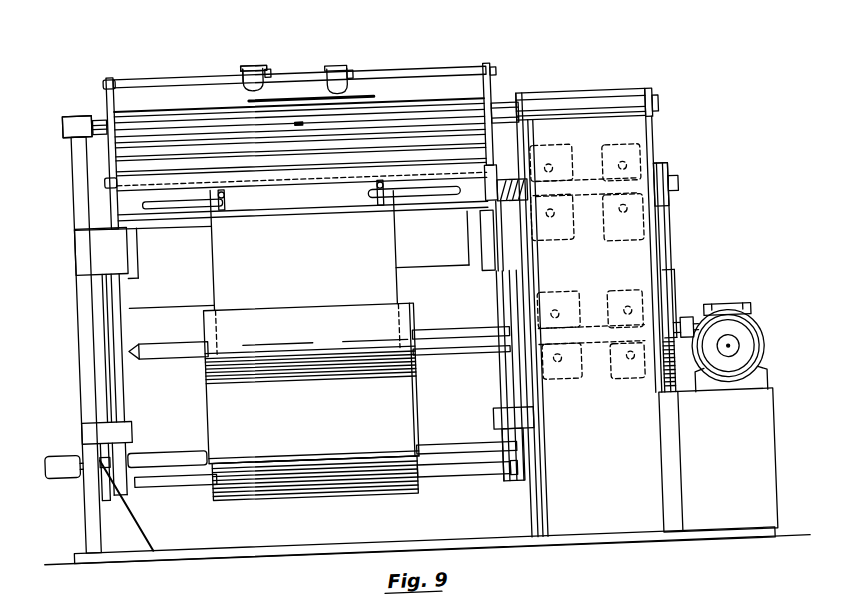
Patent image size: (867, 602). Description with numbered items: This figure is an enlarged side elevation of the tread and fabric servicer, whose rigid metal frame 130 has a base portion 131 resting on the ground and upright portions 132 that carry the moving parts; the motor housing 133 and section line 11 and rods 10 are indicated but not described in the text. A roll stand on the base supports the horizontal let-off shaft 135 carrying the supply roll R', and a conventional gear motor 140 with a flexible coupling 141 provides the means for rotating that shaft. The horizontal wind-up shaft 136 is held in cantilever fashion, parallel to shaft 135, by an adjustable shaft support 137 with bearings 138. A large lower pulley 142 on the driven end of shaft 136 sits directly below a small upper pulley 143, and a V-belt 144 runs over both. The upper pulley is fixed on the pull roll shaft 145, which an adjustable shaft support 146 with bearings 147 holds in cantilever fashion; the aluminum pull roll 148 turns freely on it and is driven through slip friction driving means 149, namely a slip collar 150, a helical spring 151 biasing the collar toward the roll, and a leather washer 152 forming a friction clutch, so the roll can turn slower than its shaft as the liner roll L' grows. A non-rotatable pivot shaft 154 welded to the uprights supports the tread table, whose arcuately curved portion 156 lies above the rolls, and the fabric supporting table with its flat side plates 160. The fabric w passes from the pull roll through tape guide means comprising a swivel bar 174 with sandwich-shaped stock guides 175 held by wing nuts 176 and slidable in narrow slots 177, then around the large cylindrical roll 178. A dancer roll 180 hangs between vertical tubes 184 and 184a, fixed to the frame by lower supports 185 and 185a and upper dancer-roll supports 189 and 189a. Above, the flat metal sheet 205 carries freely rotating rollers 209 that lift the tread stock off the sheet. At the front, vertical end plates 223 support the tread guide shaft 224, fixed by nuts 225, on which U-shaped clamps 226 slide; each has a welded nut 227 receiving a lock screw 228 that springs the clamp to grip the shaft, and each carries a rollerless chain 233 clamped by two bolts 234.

The guide rods 10 is at (487, 296).
The section line 11 is at (356, 55).
The frame 130 is at (66, 120).
The base portion 131 is at (327, 563).
The upright portions 132 is at (74, 310).
The motor support housing 133 is at (757, 476).
The let-off shaft 135 is at (178, 460).
The wind-up shaft 136 is at (411, 346).
The adjustable shaft support 137 is at (578, 410).
The bearings 138 is at (568, 332).
The gear motor 140 is at (736, 326).
The flexible coupling 141 is at (683, 343).
The lower pulley 142 is at (663, 342).
The upper pulley 143 is at (664, 198).
The V-belt 144 is at (657, 247).
The pull roll shaft 145 is at (649, 187).
The adjustable shaft support 146 is at (581, 231).
The bearings 147 is at (564, 191).
The pull roll 148 is at (422, 226).
The slip friction driving means 149 is at (502, 168).
The slip collar 150 is at (501, 272).
The helical spring 151 is at (519, 179).
The leather washer 152 is at (501, 276).
The pivot shaft 154 is at (96, 117).
The arcuately curved portion 156 is at (190, 275).
The side plates 160 is at (67, 158).
The swivel bar 174 is at (139, 225).
The stock guides 175 is at (210, 225).
The wing nuts 176 is at (225, 206).
The slots 177 is at (160, 214).
The roll 178 is at (107, 164).
The dancer roll 180 is at (474, 495).
The vertical tube 184 is at (485, 371).
The vertical tube 184a is at (108, 408).
The lower support 185 is at (513, 435).
The lower support 185a is at (109, 435).
The dancer-roll support 189 is at (501, 290).
The dancer-roll support 189a is at (68, 270).
The flat metal sheet 205 is at (149, 113).
The rollers 209 is at (358, 110).
The end plates 223 is at (490, 100).
The tread guide shaft 224 is at (466, 84).
The nuts 225 is at (491, 83).
The U-shaped clamps 226 is at (321, 77).
The nut 227 is at (243, 74).
The lock screws 228 is at (244, 77).
The rollerless chain 233 is at (237, 81).
The bolts 234 is at (344, 101).
The fabric w is at (380, 292).
The liner roll L' is at (291, 341).
The supply roll R' is at (329, 484).